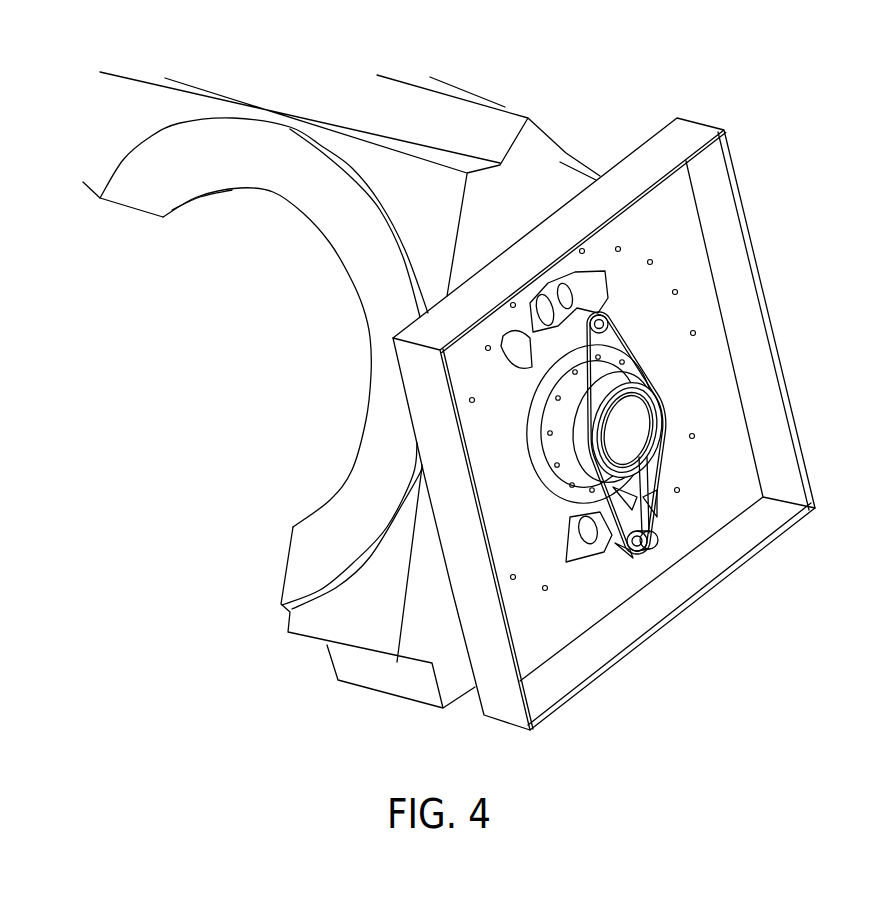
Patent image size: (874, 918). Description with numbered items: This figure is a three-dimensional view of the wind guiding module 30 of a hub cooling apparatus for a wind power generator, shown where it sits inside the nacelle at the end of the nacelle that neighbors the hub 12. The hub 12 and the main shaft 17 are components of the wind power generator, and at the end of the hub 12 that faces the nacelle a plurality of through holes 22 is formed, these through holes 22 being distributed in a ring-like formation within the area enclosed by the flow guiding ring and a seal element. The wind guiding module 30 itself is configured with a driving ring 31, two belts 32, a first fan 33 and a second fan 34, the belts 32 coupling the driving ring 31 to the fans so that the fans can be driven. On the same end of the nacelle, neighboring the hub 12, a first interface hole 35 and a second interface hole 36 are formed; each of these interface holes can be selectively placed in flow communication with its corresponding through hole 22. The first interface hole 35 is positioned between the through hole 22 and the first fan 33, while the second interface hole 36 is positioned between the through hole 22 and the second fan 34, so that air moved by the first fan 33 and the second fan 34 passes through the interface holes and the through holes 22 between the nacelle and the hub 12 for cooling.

The hub 12 is at (468, 137).
The main shaft 17 is at (632, 435).
The through holes 22 is at (540, 306).
The wind guiding module 30 is at (705, 328).
The driving ring 31 is at (625, 384).
The belts 32 is at (640, 503).
The first fan 33 is at (598, 302).
The second fan 34 is at (617, 547).
The first interface hole 35 is at (603, 290).
The second interface hole 36 is at (580, 587).